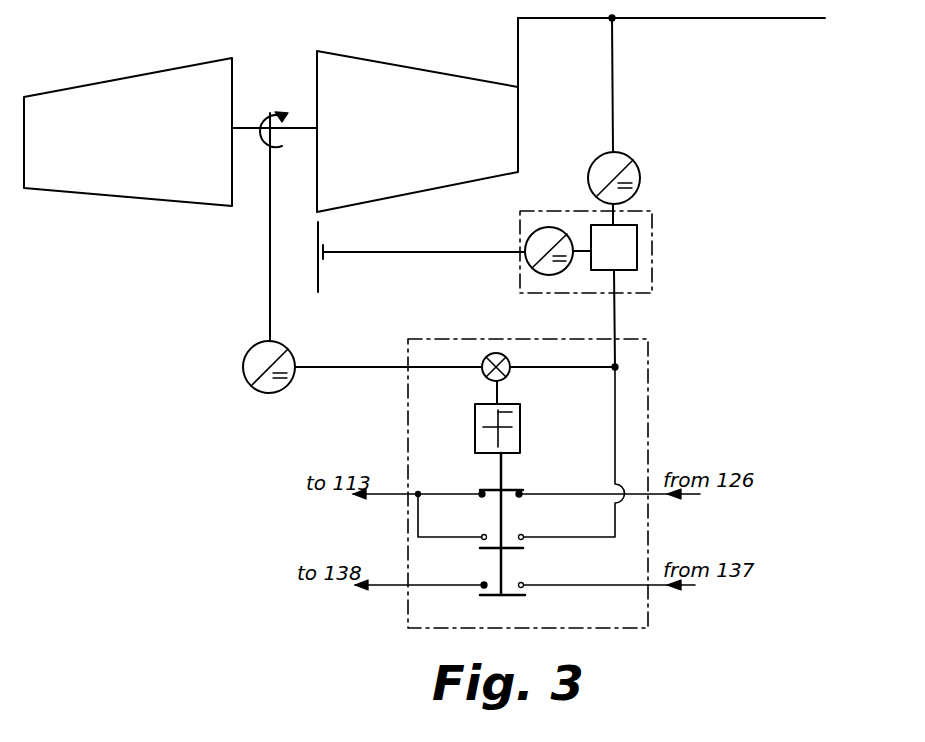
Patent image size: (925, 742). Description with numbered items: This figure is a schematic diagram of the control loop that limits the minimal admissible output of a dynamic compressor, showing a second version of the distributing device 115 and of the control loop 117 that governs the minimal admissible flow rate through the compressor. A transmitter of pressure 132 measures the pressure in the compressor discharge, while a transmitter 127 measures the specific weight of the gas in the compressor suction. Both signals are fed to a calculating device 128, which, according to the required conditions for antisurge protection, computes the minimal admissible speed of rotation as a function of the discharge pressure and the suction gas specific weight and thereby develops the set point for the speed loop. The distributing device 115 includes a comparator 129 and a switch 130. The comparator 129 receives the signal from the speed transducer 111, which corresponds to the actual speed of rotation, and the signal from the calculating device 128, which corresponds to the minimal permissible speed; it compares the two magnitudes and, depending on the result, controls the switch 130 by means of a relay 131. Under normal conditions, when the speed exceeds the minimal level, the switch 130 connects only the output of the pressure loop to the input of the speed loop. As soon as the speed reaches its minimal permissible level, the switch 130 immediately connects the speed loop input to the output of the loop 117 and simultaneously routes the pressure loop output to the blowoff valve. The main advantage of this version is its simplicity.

The speed transducer 111 is at (283, 345).
The distributing device 115 is at (467, 330).
The control loop for minimal admissible flow rate 117 is at (638, 211).
The transmitter of specific weight 127 is at (540, 276).
The calculating device 128 is at (619, 262).
The comparator 129 is at (510, 373).
The switch 130 is at (512, 486).
The relay 131 is at (520, 437).
The transmitter of pressure 132 is at (630, 160).